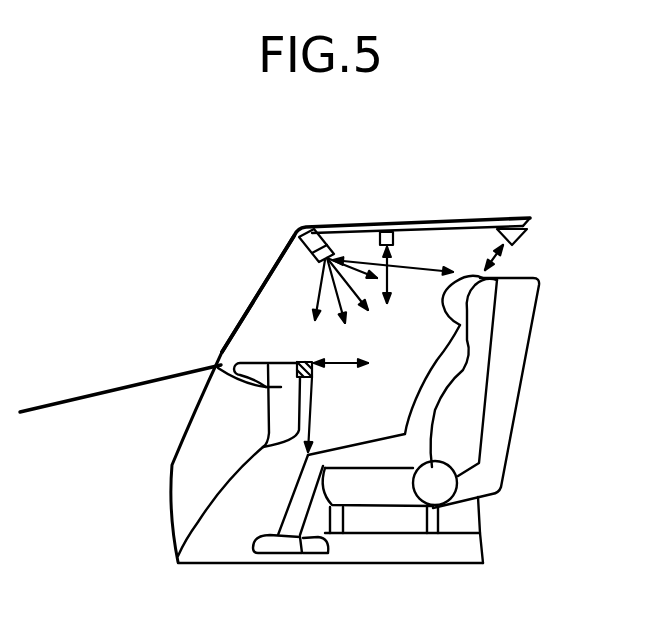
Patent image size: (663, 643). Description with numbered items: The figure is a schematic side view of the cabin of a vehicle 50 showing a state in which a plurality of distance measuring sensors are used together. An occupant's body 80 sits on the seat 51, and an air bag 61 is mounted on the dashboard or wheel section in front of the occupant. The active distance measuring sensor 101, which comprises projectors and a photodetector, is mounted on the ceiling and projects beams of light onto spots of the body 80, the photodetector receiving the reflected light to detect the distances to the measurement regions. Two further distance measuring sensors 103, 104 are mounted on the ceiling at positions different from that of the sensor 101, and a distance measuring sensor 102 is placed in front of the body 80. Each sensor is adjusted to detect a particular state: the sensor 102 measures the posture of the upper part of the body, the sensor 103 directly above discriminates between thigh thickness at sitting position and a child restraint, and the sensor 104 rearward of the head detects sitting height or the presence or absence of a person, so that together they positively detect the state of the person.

The vehicle 50 is at (67, 399).
The seat 51 is at (517, 427).
The air bag 61 is at (218, 366).
The body of an occupant 80 is at (475, 279).
The active distance measuring sensor 101 is at (315, 237).
The distance measuring sensor 102 is at (297, 360).
The distance measuring sensor 103 is at (389, 232).
The distance measuring sensor 104 is at (513, 228).